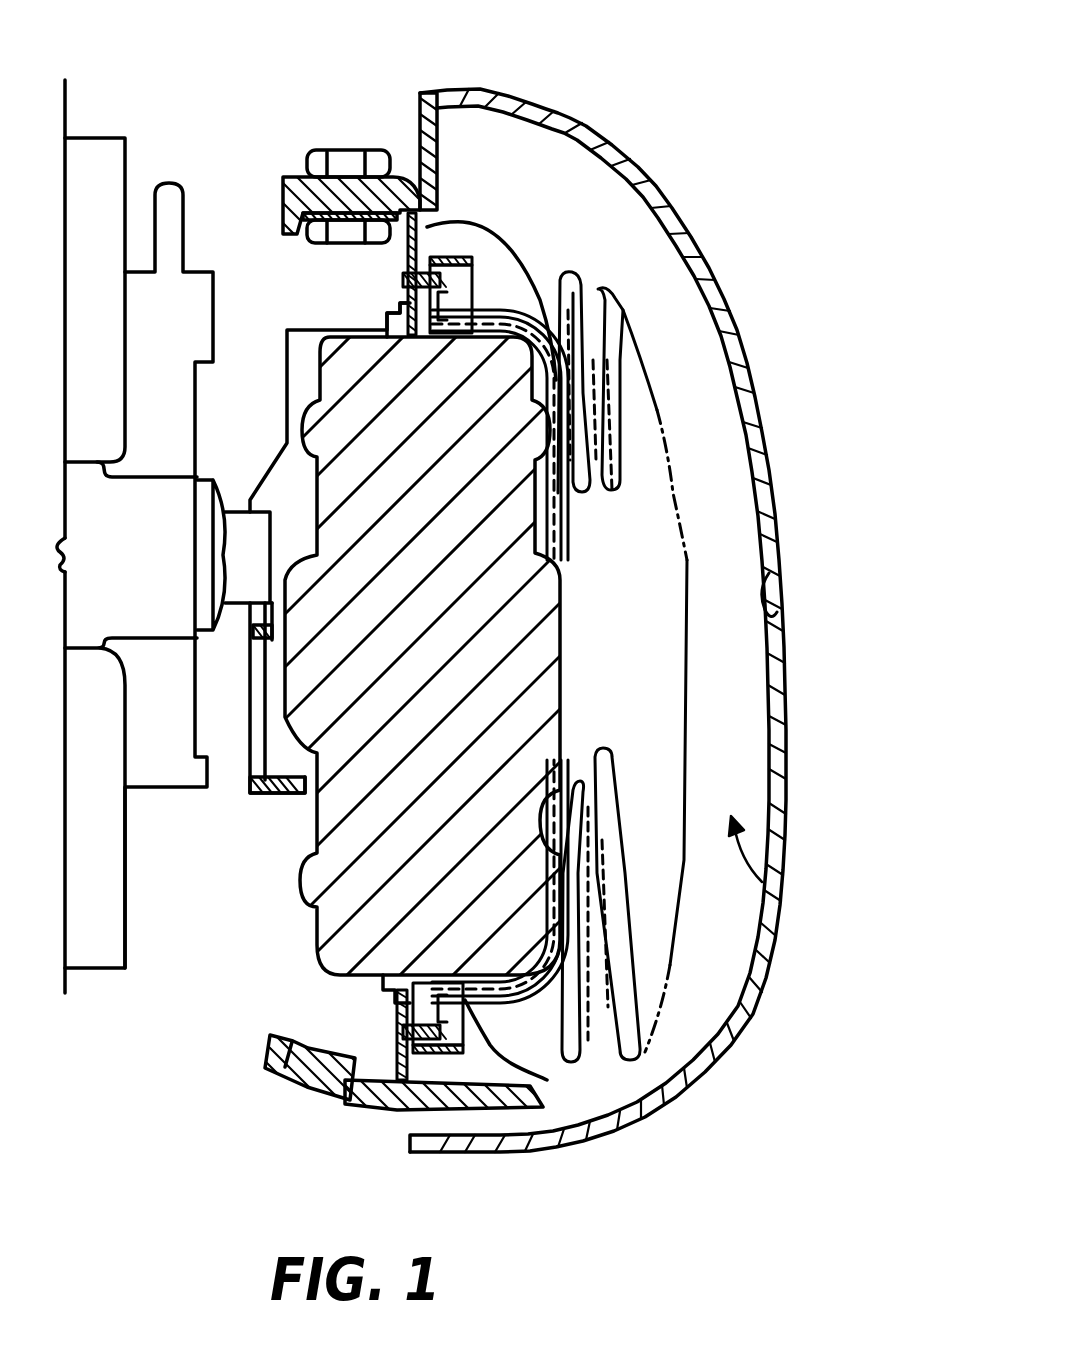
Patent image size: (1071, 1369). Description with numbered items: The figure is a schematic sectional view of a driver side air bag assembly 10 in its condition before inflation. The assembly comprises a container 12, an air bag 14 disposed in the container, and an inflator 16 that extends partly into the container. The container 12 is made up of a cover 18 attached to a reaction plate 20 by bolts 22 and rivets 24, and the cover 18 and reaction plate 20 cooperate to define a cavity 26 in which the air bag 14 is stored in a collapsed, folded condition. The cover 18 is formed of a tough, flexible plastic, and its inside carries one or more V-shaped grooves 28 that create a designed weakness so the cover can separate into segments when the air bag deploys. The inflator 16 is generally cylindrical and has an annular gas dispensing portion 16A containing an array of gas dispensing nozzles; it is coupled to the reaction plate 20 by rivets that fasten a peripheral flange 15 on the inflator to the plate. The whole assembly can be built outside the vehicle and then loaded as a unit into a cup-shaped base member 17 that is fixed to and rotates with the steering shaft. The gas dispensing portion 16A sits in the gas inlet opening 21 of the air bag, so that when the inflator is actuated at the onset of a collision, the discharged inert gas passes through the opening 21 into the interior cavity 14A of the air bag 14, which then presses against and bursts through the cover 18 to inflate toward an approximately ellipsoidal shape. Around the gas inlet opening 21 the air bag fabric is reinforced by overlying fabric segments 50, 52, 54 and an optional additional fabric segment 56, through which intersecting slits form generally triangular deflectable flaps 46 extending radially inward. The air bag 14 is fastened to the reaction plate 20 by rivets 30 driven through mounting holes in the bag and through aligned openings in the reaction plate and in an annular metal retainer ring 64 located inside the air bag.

The driver side air bag assembly 10 is at (658, 84).
The container 12 is at (417, 95).
The air bag 14 is at (545, 255).
The interior cavity 14A is at (660, 665).
The peripheral flange 15 is at (387, 990).
The inflator 16 is at (360, 827).
The annular gas dispensing portion 16A is at (490, 257).
The cup-shaped base member 17 is at (285, 372).
The cover 18 is at (738, 307).
The reaction plate 20 is at (403, 265).
The gas inlet opening 21 is at (570, 663).
The bolts 22 is at (345, 160).
The rivets 24 is at (330, 1097).
The cavity 26 is at (780, 900).
The V-shaped grooves 28 is at (776, 577).
The rivets 30 is at (395, 280).
The deflectable flaps 46 is at (563, 543).
The fabric segment 50 is at (573, 587).
The fabric segment 52 is at (573, 543).
The fabric segment 54 is at (651, 694).
The additional fabric segment 56 is at (676, 764).
The annular metal retainer ring 64 is at (480, 255).